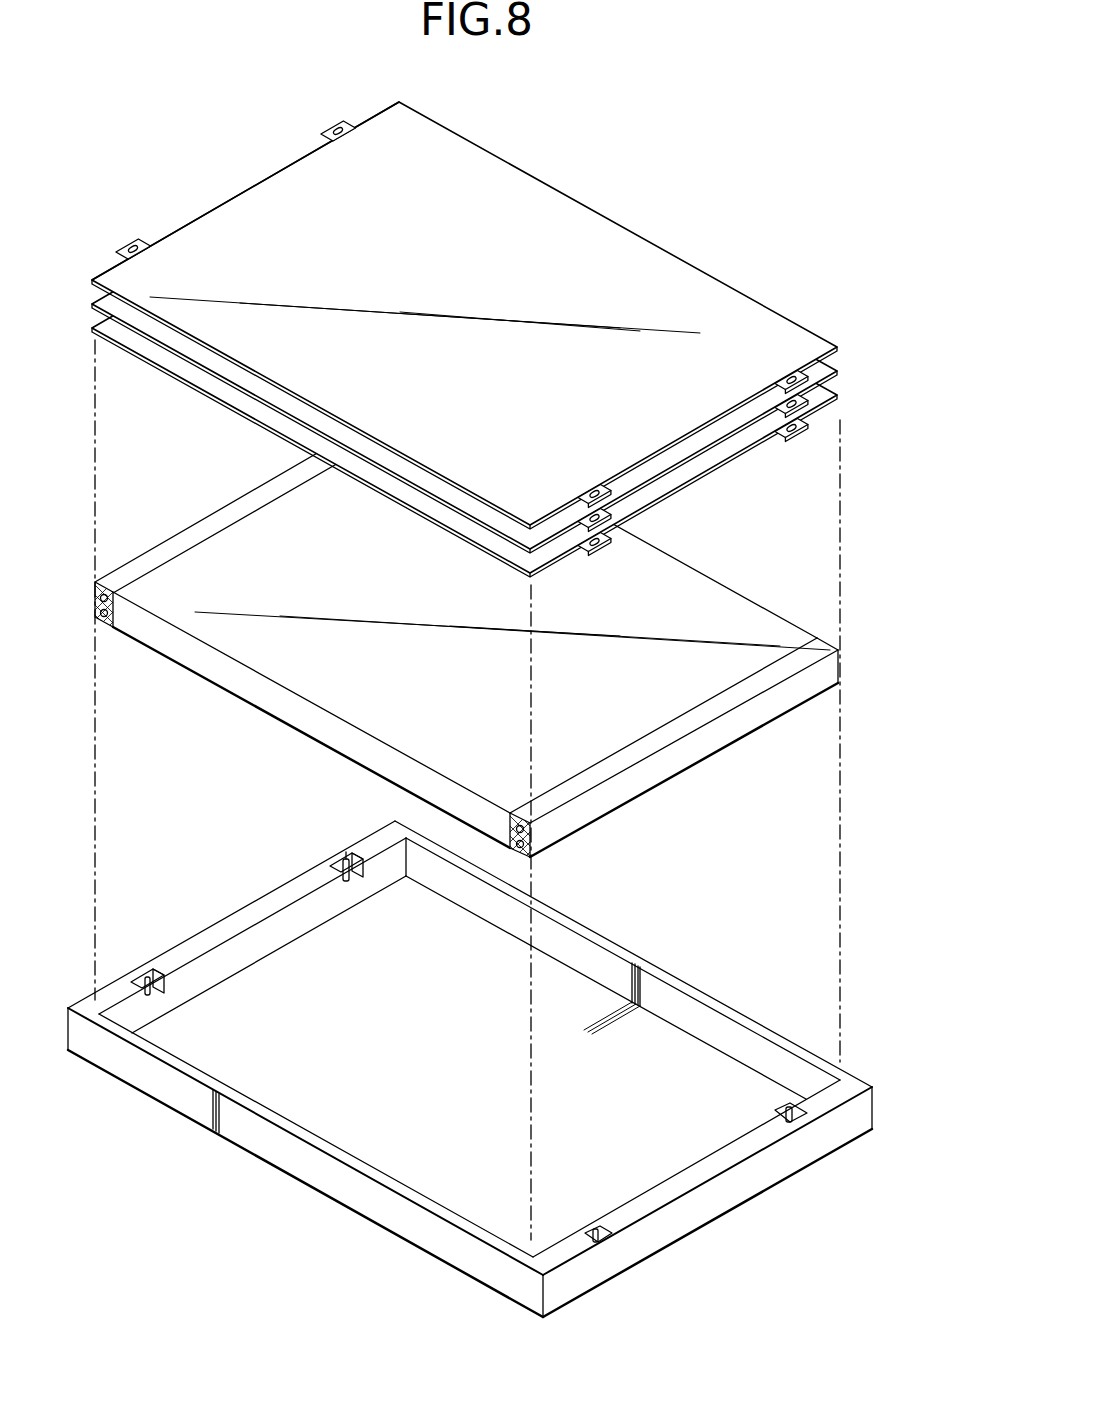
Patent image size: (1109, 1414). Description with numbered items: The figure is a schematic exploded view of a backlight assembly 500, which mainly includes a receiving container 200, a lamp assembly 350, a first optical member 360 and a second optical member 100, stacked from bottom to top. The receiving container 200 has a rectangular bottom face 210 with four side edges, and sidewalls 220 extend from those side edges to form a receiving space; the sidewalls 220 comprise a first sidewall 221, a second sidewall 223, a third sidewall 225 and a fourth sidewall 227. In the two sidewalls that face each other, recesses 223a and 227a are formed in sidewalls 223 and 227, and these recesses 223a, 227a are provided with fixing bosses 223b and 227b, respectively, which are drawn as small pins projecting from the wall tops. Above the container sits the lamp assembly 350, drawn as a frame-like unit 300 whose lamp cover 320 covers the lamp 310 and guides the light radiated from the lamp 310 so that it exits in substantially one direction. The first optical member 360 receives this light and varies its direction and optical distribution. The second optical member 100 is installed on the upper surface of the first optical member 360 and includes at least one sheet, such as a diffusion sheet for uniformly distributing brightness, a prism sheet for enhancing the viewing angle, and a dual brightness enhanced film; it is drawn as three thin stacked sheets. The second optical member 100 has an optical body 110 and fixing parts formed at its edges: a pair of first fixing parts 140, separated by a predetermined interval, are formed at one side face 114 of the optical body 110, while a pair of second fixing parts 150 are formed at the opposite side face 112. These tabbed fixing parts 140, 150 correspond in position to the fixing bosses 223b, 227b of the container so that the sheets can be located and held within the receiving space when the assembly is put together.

The second optical member 100 is at (464, 315).
The optical body 110 is at (464, 291).
The side face 112 is at (244, 186).
The side face 114 is at (464, 363).
The first fixing part 140 is at (798, 460).
The second fixing part 150 is at (316, 116).
The receiving container 200 is at (494, 1059).
The bottom face 210 is at (633, 1173).
The sidewalls 220 is at (666, 995).
The first sidewall 221 is at (721, 1031).
The second sidewall 223 is at (241, 929).
The recess 223a is at (336, 861).
The fixing boss 223b is at (344, 857).
The third sidewall 225 is at (315, 1166).
The fourth sidewall 227 is at (713, 1203).
The recess 227a is at (803, 1122).
The fixing boss 227b is at (779, 1113).
The mold frame 300 is at (499, 659).
The lamp 310 is at (513, 853).
The lamp cover 320 is at (598, 803).
The lamp assembly 350 is at (694, 753).
The first optical member 360 is at (730, 670).
The backlight assembly 500 is at (733, 201).